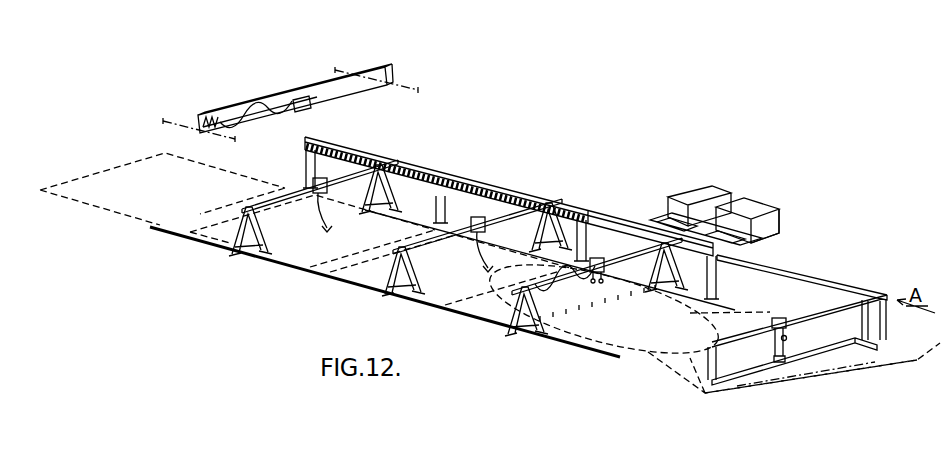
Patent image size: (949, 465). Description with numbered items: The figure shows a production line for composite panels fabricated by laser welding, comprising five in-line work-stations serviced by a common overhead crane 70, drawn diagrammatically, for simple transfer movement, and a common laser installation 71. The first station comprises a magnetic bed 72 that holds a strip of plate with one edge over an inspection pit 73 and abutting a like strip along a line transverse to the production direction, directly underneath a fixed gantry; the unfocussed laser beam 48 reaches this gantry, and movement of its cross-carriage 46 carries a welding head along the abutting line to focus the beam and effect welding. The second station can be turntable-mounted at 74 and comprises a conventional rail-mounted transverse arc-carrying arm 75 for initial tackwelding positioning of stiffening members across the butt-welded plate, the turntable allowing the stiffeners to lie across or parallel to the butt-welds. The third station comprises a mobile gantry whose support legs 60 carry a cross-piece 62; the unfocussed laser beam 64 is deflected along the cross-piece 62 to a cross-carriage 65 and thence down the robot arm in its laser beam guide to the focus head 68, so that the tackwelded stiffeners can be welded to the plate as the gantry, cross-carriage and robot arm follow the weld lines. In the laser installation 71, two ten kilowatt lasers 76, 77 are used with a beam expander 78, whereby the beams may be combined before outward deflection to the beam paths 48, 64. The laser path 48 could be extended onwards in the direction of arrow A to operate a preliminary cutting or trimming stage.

The cross-carriage 46 is at (777, 322).
The unfocussed laser beam 48 is at (836, 288).
The support legs 60 is at (253, 240).
The cross-piece 62 is at (376, 169).
The unfocussed laser beam 64 is at (490, 183).
The cross-carriage 65 is at (318, 180).
The focus head 68 is at (330, 226).
The overhead crane 70 is at (362, 72).
The laser installation 71 is at (786, 221).
The magnetic bed 72 is at (845, 380).
The inspection pit 73 is at (716, 396).
The turntable mounting 74 is at (522, 340).
The transverse arc-carrying arm 75 is at (623, 291).
The laser 76 is at (700, 194).
The laser 77 is at (768, 228).
The beam expander 78 is at (718, 234).